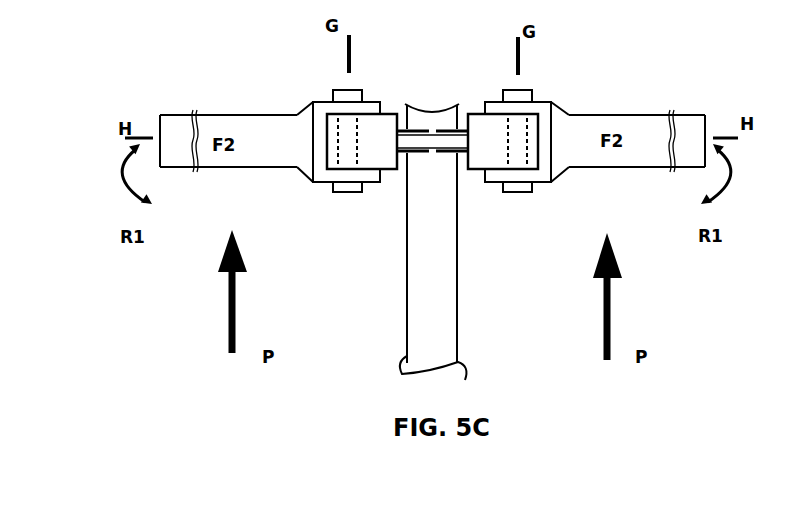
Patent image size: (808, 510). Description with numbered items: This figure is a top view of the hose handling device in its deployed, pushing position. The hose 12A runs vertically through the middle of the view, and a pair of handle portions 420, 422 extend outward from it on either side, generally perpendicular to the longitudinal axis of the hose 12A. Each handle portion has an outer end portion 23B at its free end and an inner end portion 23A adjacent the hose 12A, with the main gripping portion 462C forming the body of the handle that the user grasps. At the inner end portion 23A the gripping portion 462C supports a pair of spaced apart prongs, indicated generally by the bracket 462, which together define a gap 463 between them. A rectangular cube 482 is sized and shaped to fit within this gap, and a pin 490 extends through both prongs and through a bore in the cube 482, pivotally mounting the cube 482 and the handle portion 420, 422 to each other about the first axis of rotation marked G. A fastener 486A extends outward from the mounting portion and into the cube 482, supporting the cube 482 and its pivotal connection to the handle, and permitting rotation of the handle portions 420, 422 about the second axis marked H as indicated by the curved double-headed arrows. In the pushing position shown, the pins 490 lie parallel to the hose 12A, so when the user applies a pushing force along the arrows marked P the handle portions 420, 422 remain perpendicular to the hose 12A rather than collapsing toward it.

The handle portion 420 is at (416, 134).
The handle portion 422 is at (651, 119).
The inner end portion 23A is at (302, 143).
The outer end portion 23B is at (177, 143).
The main gripping portion 462C is at (260, 145).
The housing bracket 462 is at (542, 101).
The gap 463 is at (553, 138).
The rectangular cube 482 is at (477, 104).
The pin 490 is at (358, 137).
The fastener 486A is at (415, 138).
The hose 12A is at (448, 298).